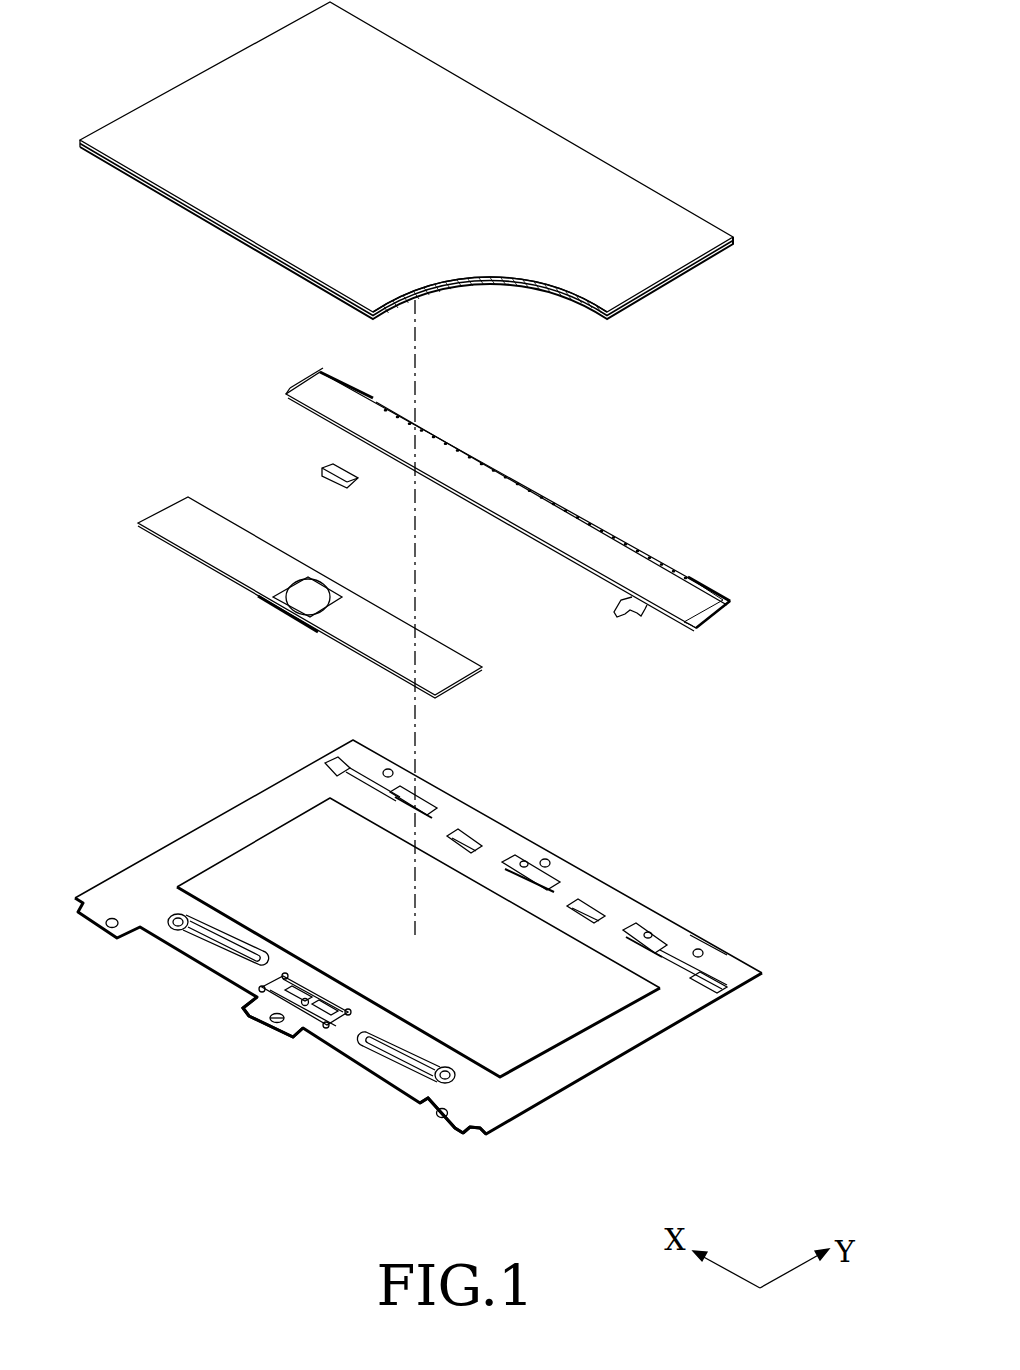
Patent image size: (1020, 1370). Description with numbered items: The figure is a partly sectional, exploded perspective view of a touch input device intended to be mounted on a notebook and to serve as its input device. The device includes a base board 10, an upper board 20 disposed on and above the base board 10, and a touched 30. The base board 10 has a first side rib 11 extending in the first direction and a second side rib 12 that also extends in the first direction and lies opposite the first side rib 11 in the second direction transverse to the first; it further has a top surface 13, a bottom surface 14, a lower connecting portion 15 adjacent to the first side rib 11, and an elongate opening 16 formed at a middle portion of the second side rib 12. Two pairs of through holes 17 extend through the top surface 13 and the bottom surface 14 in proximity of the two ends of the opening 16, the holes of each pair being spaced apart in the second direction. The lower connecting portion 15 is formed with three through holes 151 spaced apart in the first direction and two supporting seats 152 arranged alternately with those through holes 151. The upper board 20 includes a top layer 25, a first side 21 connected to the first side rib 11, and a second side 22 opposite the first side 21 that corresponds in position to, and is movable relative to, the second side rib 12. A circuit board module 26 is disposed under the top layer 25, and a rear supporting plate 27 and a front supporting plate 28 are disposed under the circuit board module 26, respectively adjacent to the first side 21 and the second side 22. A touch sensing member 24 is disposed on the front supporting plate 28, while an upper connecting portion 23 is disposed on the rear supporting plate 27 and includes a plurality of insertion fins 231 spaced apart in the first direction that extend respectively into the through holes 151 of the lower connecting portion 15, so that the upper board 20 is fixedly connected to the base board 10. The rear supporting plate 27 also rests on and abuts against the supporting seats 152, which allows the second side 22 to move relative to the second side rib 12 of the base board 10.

The base board 10 is at (434, 974).
The first side rib 11 is at (745, 955).
The second side rib 12 is at (440, 1122).
The top surface 13 is at (553, 1078).
The bottom surface 14 is at (477, 1118).
The lower connecting portion 15 is at (668, 945).
The opening 16 is at (346, 1016).
The through holes 17 is at (285, 980).
The upper board 20 is at (430, 188).
The first side 21 is at (406, 159).
The second side 22 is at (125, 174).
The upper connecting portion 23 is at (513, 499).
The insertion fins 231 is at (535, 494).
The touch sensing member 24 is at (305, 595).
The top layer 25 is at (570, 165).
The circuit board module 26 is at (557, 311).
The rear supporting plate 27 is at (700, 603).
The front supporting plate 28 is at (310, 558).
The touched 30 is at (301, 1055).
The through holes 151 is at (432, 808).
The supporting seats 152 is at (470, 838).